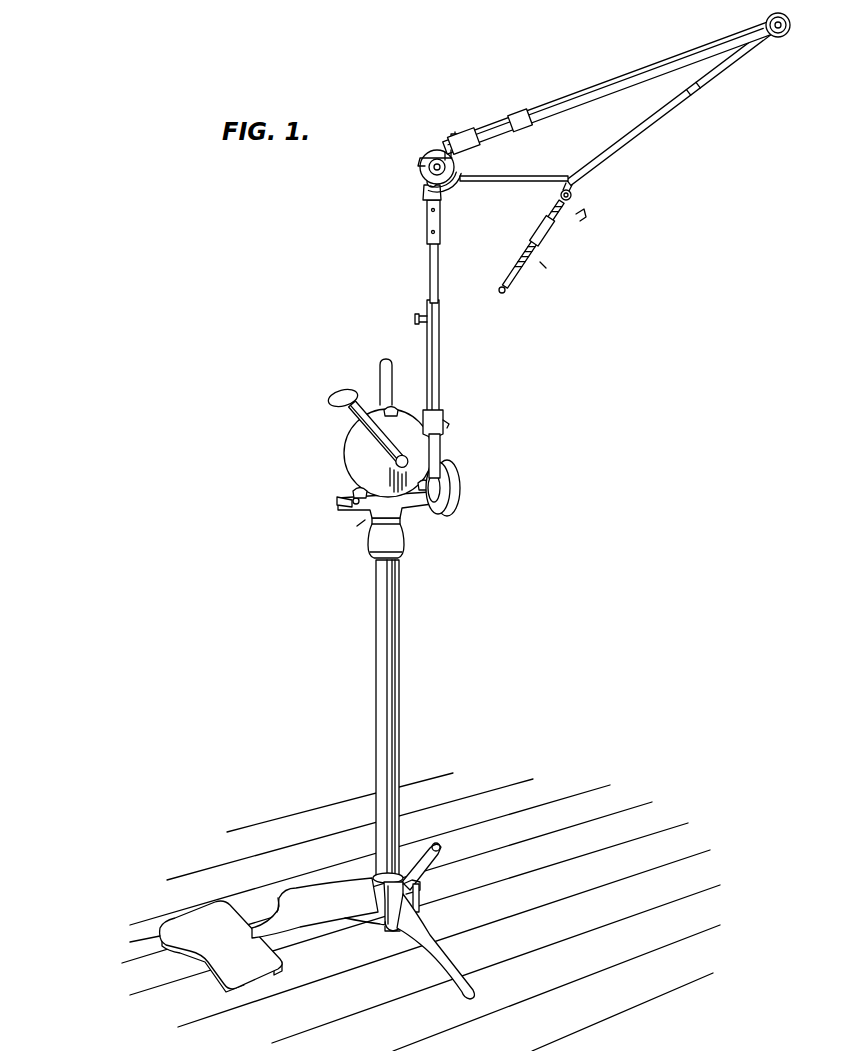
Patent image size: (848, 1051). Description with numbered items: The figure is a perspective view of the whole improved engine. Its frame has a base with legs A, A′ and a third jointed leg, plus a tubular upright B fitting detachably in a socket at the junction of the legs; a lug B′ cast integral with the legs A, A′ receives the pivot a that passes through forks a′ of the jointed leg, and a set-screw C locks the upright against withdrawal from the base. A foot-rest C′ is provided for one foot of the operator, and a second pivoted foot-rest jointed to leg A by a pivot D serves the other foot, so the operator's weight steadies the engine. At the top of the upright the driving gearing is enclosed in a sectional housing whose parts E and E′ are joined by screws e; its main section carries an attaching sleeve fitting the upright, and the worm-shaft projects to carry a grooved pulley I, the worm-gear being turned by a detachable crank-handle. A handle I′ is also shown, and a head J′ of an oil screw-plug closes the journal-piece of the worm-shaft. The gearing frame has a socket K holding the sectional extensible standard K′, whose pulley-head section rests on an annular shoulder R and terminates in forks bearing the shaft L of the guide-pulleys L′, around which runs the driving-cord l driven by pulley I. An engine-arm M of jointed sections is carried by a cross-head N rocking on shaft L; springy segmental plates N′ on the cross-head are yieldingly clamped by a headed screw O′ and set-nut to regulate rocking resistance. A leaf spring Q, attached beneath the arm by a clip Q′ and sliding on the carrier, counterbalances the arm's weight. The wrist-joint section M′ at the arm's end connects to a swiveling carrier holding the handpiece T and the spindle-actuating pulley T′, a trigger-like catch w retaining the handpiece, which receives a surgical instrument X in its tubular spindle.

The base-leg A is at (276, 898).
The base-leg A′ is at (430, 852).
The upright section or standard B is at (399, 690).
The lug B′ is at (375, 922).
The set-screw C is at (418, 880).
The foot-rest C′ is at (315, 908).
The pivot D is at (130, 947).
The pivot a is at (373, 878).
The fork a′ is at (419, 897).
The main section of gearing frame E is at (344, 456).
The gearing-frame section E′ is at (366, 470).
The screws e is at (405, 402).
The grooved pulley I is at (460, 494).
The handle lever I′ is at (380, 378).
The head of screw-plug J′ is at (352, 503).
The socket K is at (444, 420).
The sectional extensible standard K′ is at (440, 338).
The shaft L is at (428, 178).
The guide-pulleys L′ is at (420, 164).
The driving-cord l is at (442, 445).
The engine-arm M is at (607, 88).
The wrist-joint section M′ is at (562, 200).
The cross-head or arm N is at (455, 132).
The segmental plates N′ is at (462, 187).
The headed screw O′ is at (440, 195).
The spring Q is at (488, 142).
The screw-attached clip Q′ is at (517, 116).
The annular shoulder R is at (430, 250).
The handpiece T is at (540, 262).
The spindle-actuating pulley T′ is at (582, 222).
The trigger-like catch w is at (578, 220).
The surgical instrument X is at (493, 298).